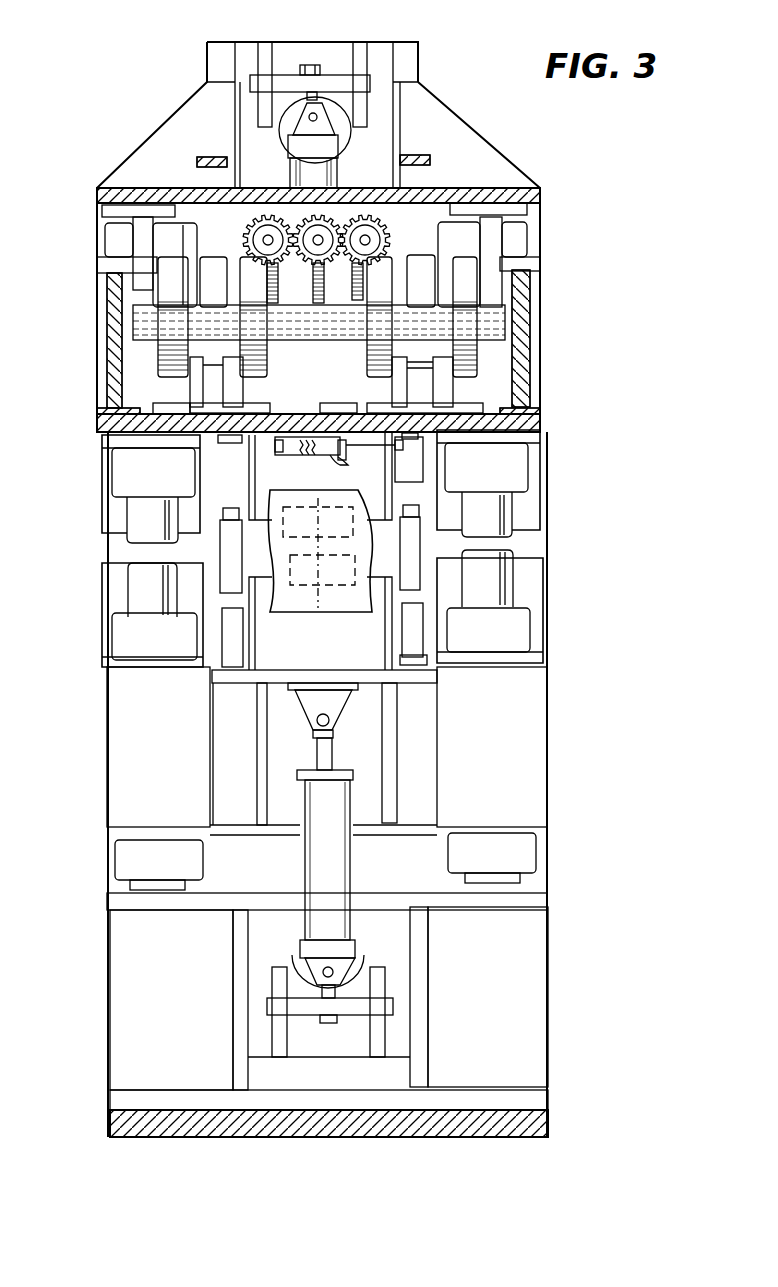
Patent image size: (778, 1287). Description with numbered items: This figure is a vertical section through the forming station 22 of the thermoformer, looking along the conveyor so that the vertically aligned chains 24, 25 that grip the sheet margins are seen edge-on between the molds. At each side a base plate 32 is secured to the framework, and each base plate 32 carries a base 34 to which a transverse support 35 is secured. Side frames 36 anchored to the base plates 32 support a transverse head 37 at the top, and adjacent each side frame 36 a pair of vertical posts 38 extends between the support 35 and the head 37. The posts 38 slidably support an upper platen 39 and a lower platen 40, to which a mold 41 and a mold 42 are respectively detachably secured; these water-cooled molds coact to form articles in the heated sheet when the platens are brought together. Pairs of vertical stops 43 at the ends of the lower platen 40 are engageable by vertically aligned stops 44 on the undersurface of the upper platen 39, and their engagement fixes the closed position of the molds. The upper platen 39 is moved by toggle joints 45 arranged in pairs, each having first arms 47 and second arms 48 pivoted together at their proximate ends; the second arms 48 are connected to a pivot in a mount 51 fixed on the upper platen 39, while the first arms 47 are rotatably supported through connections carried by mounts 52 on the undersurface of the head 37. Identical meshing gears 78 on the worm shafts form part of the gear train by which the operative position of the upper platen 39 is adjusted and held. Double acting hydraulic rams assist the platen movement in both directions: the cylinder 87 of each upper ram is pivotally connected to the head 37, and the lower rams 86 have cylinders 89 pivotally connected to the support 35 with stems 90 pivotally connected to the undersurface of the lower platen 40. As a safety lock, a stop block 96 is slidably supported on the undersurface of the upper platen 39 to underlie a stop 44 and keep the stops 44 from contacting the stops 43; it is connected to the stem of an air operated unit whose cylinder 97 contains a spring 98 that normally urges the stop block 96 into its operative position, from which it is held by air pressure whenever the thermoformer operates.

The forming station 22 is at (570, 345).
The chain 24 is at (302, 615).
The chain 25 is at (340, 613).
The base plate 32 is at (538, 1125).
The base 34 is at (538, 1093).
The transverse support 35 is at (538, 988).
The side frame 36 is at (101, 522).
The transverse head 37 is at (490, 167).
The vertical post 38 is at (497, 513).
The upper platen 39 is at (530, 421).
The lower platen 40 is at (437, 675).
The mold 41 is at (260, 480).
The mold 42 is at (252, 697).
The vertical stop 43 is at (422, 633).
The stop 44 is at (225, 443).
The toggle joint 45 is at (499, 333).
The first arm 47 is at (232, 316).
The second arm 48 is at (243, 365).
The mount 51 is at (187, 397).
The mount 52 is at (147, 246).
The gear 78 is at (270, 215).
The hydraulic ram 86 is at (359, 853).
The cylinder 87 is at (328, 176).
The cylinder 89 is at (313, 855).
The stem 90 is at (330, 755).
The stop block 96 is at (423, 482).
The cylinder 97 is at (342, 460).
The spring 98 is at (305, 457).